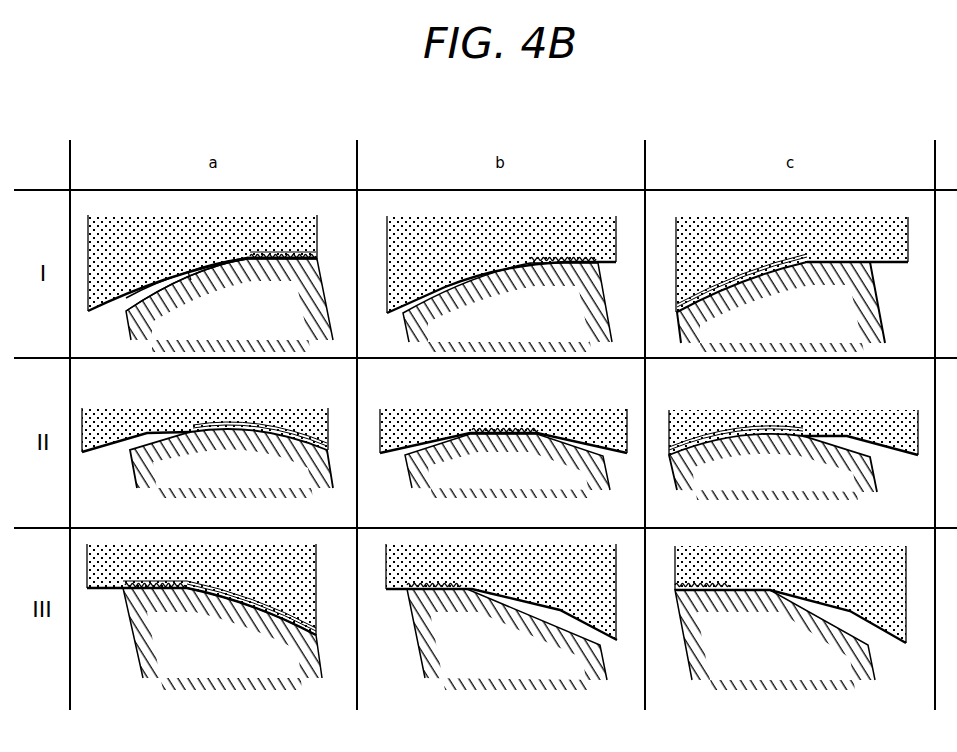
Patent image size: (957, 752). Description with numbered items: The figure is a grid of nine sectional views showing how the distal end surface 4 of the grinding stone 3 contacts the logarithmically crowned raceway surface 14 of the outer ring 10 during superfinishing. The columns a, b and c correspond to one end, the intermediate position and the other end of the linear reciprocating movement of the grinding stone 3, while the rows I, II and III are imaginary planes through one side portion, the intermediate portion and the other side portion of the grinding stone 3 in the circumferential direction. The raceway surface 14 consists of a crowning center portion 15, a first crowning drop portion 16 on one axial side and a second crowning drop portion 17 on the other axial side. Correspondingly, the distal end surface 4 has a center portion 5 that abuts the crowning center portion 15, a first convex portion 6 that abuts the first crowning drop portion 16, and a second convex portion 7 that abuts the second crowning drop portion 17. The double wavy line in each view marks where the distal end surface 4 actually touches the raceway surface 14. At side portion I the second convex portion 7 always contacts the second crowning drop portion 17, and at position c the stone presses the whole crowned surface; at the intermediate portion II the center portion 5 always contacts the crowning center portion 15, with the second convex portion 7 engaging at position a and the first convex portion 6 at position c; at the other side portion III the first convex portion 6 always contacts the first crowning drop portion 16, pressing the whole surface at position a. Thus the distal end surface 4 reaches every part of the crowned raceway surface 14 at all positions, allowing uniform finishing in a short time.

The grinding stone 3 is at (110, 238).
The distal end surface 4 is at (102, 308).
The center portion 5 is at (193, 282).
The first convex portion 6 is at (126, 293).
The second convex portion 7 is at (263, 263).
The outer ring 10 is at (298, 295).
The raceway surface 14 is at (300, 255).
The crowning center portion 15 is at (205, 264).
The first crowning drop portion 16 is at (138, 297).
The second crowning drop portion 17 is at (285, 252).